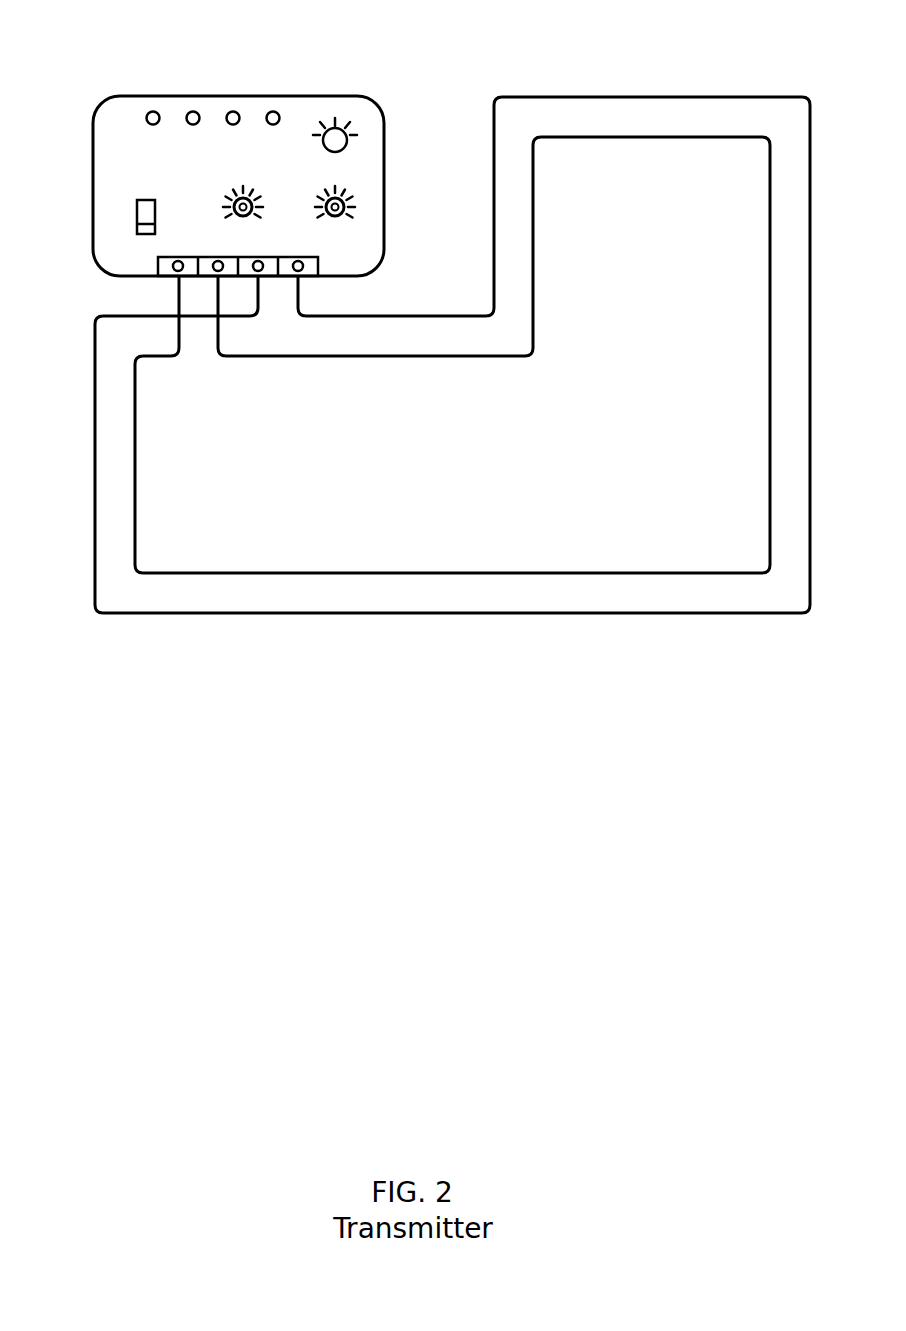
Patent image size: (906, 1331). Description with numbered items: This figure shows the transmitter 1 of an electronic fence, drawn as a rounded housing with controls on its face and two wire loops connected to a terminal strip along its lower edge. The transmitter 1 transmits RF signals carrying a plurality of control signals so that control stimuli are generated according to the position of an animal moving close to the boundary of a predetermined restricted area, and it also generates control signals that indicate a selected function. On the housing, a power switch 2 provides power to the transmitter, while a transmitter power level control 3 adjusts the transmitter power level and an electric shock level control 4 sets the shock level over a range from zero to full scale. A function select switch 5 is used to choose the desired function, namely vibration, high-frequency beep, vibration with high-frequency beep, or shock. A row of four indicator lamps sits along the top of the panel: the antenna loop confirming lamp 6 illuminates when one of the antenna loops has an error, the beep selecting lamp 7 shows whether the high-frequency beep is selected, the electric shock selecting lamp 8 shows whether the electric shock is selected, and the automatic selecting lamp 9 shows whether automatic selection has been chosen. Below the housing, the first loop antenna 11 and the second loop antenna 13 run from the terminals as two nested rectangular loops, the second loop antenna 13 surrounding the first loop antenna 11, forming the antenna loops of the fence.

The transmitter 1 is at (93, 235).
The power switch 2 is at (139, 200).
The transmitter power level control 3 is at (234, 198).
The electric shock level control 4 is at (346, 193).
The function select switch 5 is at (335, 128).
The antenna loop confirming lamp 6 is at (152, 111).
The beep selecting lamp 7 is at (193, 111).
The electric shock selecting lamp 8 is at (232, 111).
The automatic selecting lamp 9 is at (273, 111).
The first loop antenna 11 is at (577, 137).
The second loop antenna 13 is at (692, 97).